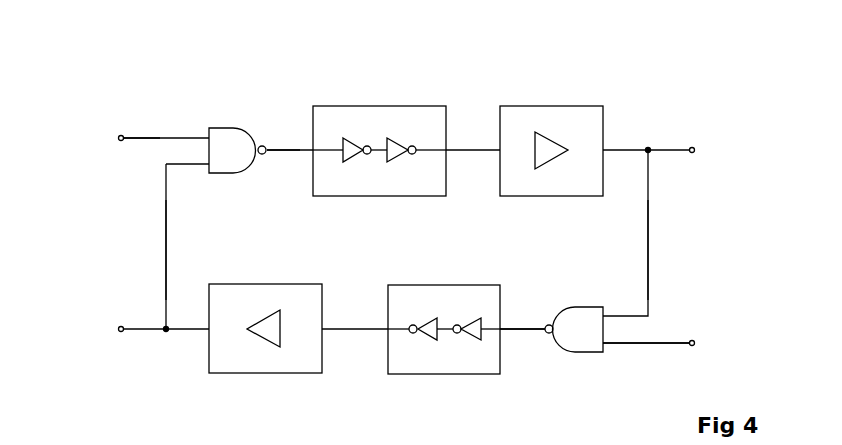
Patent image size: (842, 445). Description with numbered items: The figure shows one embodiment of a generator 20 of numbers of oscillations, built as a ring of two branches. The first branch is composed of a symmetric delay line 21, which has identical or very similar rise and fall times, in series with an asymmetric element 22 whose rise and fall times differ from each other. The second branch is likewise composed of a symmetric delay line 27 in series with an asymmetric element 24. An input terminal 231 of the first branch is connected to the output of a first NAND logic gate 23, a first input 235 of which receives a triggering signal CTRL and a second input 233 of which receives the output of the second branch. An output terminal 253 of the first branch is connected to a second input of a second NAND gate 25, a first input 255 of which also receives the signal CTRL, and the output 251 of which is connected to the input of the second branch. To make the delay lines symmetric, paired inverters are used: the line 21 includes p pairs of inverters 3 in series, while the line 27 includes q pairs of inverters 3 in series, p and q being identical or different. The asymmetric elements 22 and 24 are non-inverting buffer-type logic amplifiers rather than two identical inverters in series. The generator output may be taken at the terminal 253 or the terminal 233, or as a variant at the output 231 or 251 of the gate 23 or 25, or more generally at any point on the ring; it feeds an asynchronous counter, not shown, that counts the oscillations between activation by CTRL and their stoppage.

The generator of numbers of oscillations 20 is at (480, 62).
The delay line 21 is at (379, 106).
The asymmetric element 22 is at (567, 106).
The first NAND logic gate 23 is at (233, 140).
The asymmetric element 24 is at (275, 284).
The second NAND gate 25 is at (590, 344).
The delay line 27 is at (405, 285).
The inverter 3 is at (350, 161).
The input terminal of the first branch 231 is at (283, 147).
The second input of the first NAND gate 233 is at (166, 233).
The first input of the first NAND gate 235 is at (152, 136).
The output of the second NAND gate 251 is at (520, 328).
The output terminal of the first branch 253 is at (648, 233).
The first input of the second NAND gate 255 is at (665, 342).